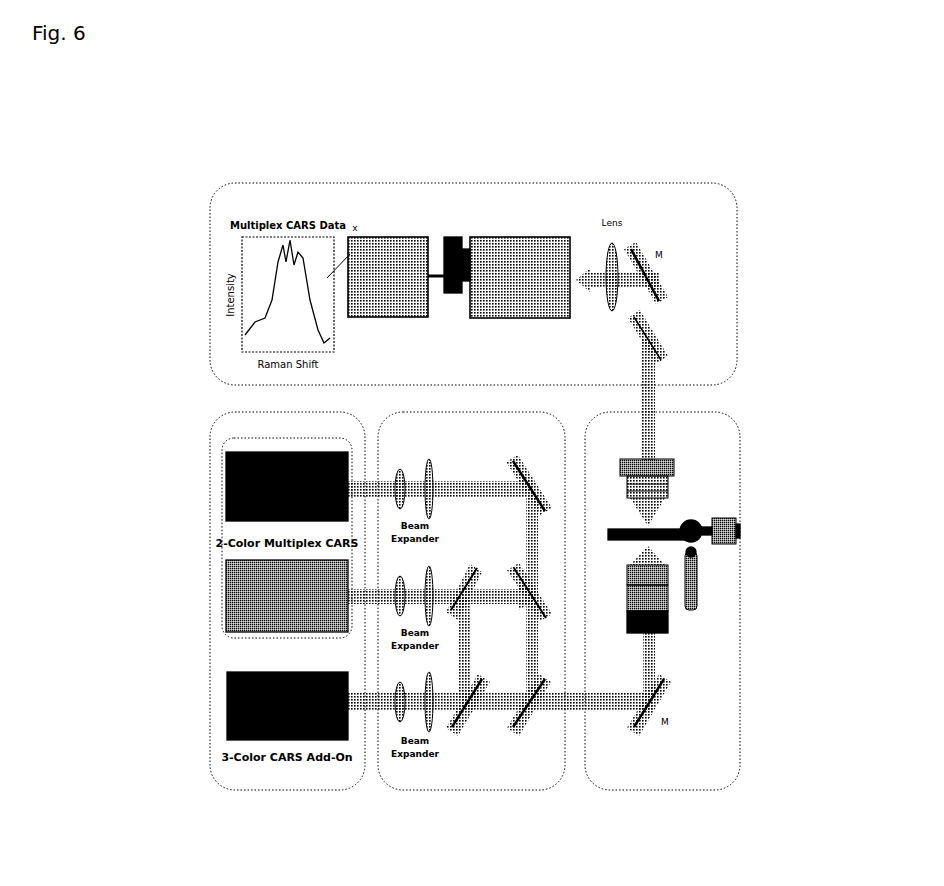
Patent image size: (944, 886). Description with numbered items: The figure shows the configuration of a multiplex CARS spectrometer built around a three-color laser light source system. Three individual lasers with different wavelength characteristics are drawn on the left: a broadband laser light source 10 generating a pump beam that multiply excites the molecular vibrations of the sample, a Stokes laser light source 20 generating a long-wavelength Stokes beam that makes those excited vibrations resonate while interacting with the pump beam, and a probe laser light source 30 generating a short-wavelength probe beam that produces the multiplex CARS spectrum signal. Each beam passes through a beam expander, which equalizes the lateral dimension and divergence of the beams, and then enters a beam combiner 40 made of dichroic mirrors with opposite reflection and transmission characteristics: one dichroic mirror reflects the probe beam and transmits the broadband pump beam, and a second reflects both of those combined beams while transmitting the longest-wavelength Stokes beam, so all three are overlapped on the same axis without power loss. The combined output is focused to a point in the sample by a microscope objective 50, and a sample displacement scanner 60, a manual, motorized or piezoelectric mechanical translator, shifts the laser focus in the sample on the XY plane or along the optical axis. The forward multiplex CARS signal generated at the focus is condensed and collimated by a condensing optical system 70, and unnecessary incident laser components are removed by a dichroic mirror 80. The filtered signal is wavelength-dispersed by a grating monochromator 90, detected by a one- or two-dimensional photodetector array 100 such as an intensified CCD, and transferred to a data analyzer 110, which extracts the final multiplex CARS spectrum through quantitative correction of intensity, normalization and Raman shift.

The broadband laser light source 10 is at (226, 598).
The Stokes laser light source 20 is at (226, 487).
The probe laser light source 30 is at (226, 708).
The beam combiner 40 is at (565, 790).
The microscope objective 50 is at (668, 630).
The sample displacement scanner 60 is at (710, 565).
The condensing optical system 70 is at (672, 470).
The dichroic mirror 80 is at (657, 347).
The monochromator 90 is at (514, 236).
The 1D/2D photodetector array 100 is at (453, 236).
The data analyzer 110 is at (396, 236).